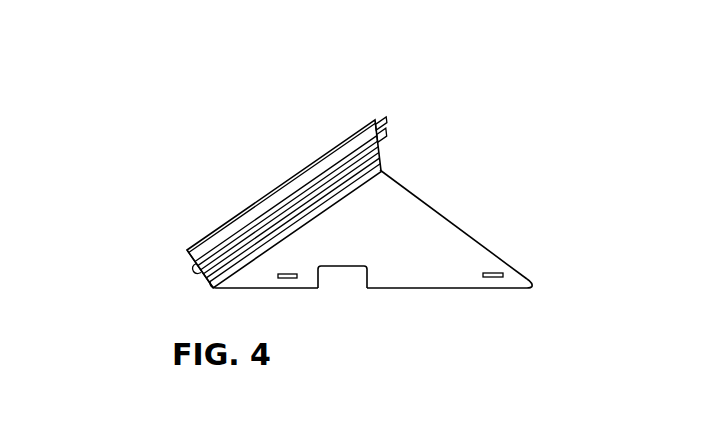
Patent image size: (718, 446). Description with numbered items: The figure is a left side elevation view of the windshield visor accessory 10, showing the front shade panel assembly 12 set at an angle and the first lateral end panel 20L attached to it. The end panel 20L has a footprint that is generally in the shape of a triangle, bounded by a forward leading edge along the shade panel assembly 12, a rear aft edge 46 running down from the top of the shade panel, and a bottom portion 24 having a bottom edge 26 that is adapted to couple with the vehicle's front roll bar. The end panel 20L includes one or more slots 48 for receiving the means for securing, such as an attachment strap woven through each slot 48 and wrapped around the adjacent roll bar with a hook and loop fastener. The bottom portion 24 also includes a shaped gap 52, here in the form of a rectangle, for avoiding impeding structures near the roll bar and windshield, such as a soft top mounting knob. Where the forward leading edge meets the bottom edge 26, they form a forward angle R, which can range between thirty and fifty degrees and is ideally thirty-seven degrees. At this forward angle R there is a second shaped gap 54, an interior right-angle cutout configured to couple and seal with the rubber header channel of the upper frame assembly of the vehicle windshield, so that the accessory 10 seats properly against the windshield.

The windshield visor accessory 10 is at (481, 169).
The front shade panel assembly 12 is at (235, 157).
The rear aft edge 46 is at (405, 190).
The first lateral end panel 20L is at (510, 231).
The slot 48 is at (524, 275).
The forward angle R is at (178, 267).
The second shaped gap 54 is at (193, 287).
The shaped gap 52 is at (346, 285).
The bottom portion 24 is at (419, 285).
The bottom edge 26 is at (473, 288).